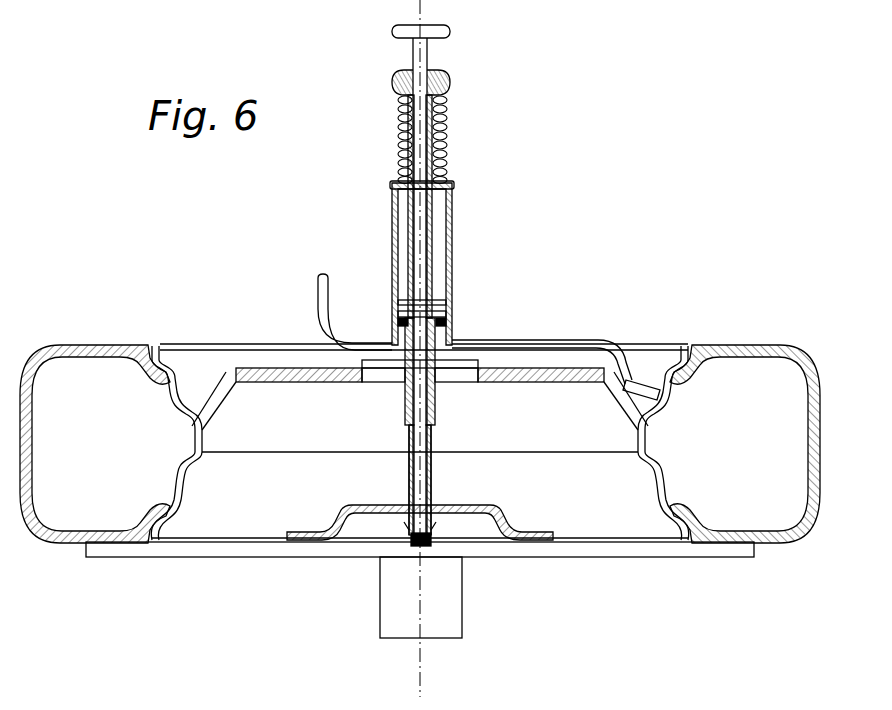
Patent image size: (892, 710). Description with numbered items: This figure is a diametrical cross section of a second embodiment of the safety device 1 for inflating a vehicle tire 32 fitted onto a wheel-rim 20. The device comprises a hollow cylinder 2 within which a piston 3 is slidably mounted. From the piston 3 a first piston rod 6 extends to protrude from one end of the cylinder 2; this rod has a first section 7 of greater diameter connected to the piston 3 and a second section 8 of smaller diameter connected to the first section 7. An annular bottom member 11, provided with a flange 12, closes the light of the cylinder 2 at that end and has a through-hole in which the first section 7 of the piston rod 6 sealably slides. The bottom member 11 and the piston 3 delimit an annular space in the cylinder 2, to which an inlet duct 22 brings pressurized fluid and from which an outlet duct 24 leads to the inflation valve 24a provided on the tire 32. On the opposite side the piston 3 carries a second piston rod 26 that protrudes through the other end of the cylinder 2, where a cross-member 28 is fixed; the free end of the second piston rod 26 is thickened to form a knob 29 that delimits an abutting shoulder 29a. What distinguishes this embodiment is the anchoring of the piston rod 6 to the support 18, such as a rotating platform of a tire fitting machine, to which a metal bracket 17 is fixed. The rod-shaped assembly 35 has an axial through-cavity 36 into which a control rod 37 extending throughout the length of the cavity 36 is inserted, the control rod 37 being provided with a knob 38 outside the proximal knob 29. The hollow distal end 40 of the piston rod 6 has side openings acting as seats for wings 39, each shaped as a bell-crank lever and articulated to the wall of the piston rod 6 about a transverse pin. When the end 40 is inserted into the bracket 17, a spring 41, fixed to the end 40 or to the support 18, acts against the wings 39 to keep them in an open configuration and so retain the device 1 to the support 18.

The safety device 1 is at (493, 210).
The cylinder 2 is at (392, 210).
The piston 3 is at (437, 301).
The first piston rod 6 is at (437, 407).
The first section 7 is at (405, 400).
The second section 8 is at (408, 480).
The annular bottom member 11 is at (455, 345).
The flange 12 is at (502, 360).
The metal bracket 17 is at (340, 527).
The support 18 is at (546, 557).
The wheel-rim 20 is at (245, 360).
The inlet duct 22 is at (318, 283).
The outlet duct 24 is at (598, 342).
The inflation valve 24a is at (663, 390).
The second piston rod 26 is at (409, 258).
The cross-member 28 is at (392, 186).
The knob 29 is at (396, 78).
The abutting shoulder 29a is at (441, 100).
The tire 32 is at (70, 345).
The rod-shaped assembly 35 is at (436, 250).
The axial through-cavity 36 is at (424, 446).
The control rod 37 is at (428, 62).
The knob 38 is at (452, 30).
The wing 39 is at (398, 532).
The distal end 40 is at (432, 503).
The spring 41 is at (432, 555).